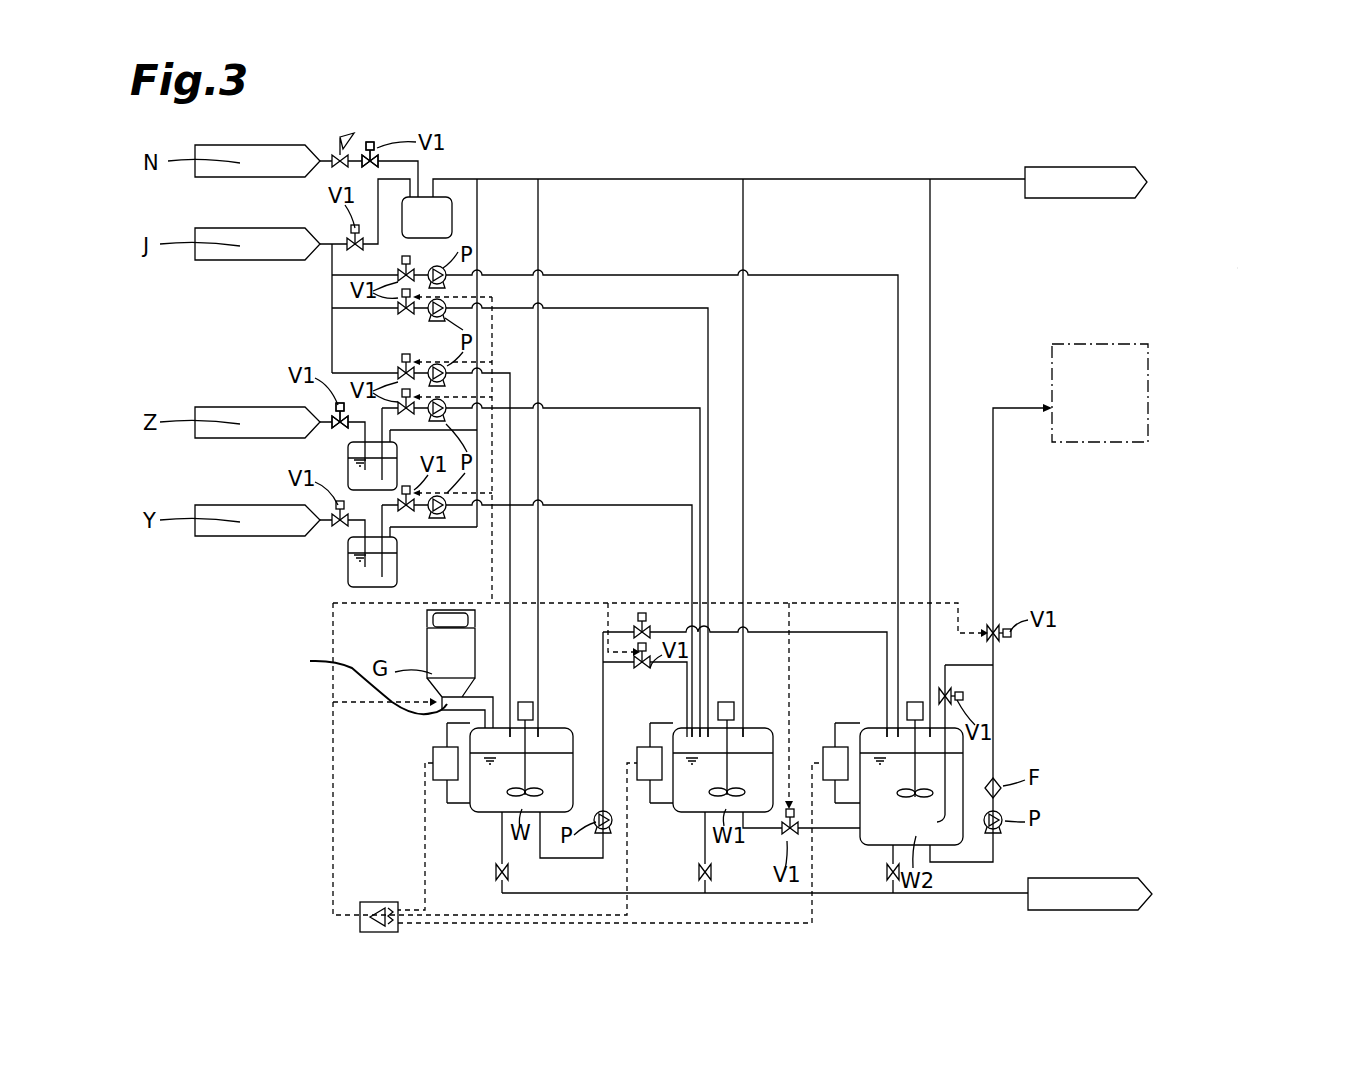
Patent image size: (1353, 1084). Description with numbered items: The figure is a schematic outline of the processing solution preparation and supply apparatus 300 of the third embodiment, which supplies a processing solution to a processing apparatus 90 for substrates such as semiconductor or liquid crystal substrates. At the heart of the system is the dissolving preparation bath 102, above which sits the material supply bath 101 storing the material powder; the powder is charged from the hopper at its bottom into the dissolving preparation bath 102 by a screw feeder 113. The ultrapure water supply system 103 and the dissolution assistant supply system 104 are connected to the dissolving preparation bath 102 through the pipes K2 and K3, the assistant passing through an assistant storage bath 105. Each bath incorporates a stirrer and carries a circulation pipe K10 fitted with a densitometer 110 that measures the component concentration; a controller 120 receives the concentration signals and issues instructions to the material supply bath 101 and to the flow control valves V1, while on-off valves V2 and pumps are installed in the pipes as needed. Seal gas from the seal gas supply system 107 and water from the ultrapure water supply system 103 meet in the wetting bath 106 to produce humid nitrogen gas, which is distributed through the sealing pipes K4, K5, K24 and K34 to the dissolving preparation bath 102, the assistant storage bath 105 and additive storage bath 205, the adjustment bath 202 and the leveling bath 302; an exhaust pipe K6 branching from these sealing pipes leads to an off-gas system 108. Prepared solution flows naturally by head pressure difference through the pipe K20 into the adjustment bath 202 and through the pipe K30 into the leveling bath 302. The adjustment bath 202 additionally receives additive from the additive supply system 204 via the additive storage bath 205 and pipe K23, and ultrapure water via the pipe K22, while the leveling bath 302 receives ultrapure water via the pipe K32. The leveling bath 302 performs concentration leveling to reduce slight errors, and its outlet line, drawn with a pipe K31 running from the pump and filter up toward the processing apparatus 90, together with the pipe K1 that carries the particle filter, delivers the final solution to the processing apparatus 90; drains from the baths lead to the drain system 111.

The seal gas supply system 107 is at (259, 183).
The ultrapure water supply system 103 is at (258, 266).
The wetting bath 106 is at (454, 218).
The additive supply system 204 is at (258, 444).
The additive storage bath 205 is at (348, 457).
The dissolution assistant supply system 104 is at (258, 542).
The assistant storage bath 105 is at (348, 553).
The material supply bath 101 is at (427, 643).
The screw feeder 113 is at (357, 682).
The dissolving preparation bath 102 is at (500, 813).
The adjustment bath 202 is at (700, 813).
The leveling bath 302 is at (880, 846).
The densitometer 110 is at (433, 758).
The controller 120 is at (360, 926).
The off-gas system 108 is at (1094, 204).
The drain system 111 is at (1091, 874).
The processing apparatus 90 is at (1101, 343).
The processing solution preparation and supply apparatus 300 is at (1318, 263).
The pipe K1 is at (869, 897).
The pipe K2 is at (509, 372).
The pipe K3 is at (613, 510).
The sealing pipe K4 is at (541, 223).
The sealing pipe K5 is at (480, 223).
The exhaust pipe K6 is at (870, 183).
The circulation pipe K10 is at (447, 798).
The pipe K20 is at (686, 667).
The pipe K22 is at (620, 312).
The pipe K23 is at (620, 412).
The sealing pipe K24 is at (745, 220).
The pipe K30 is at (849, 636).
The supply line K31 is at (995, 700).
The pipe K32 is at (821, 279).
The sealing pipe K34 is at (932, 222).
The flow control valve V1 is at (355, 285).
The on-off valve V2 is at (496, 872).